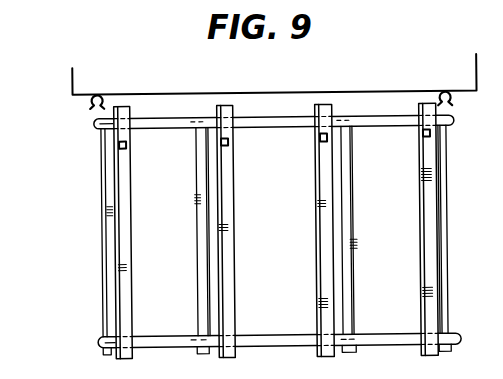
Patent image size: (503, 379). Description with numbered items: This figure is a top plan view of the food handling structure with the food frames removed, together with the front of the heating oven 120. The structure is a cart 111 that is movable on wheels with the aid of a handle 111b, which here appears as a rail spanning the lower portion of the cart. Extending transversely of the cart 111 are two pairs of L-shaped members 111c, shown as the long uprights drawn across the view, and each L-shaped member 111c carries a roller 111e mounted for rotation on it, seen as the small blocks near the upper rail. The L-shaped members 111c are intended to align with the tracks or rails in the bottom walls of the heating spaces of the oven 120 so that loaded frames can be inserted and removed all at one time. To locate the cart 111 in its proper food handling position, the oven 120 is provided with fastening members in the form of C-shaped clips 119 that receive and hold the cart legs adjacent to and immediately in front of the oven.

The cart 111 is at (249, 231).
The handle 111b is at (297, 339).
The L-shaped members 111c is at (197, 249).
The rollers 111e is at (225, 146).
The C-shaped clips 119 is at (89, 105).
The heating oven 120 is at (73, 82).